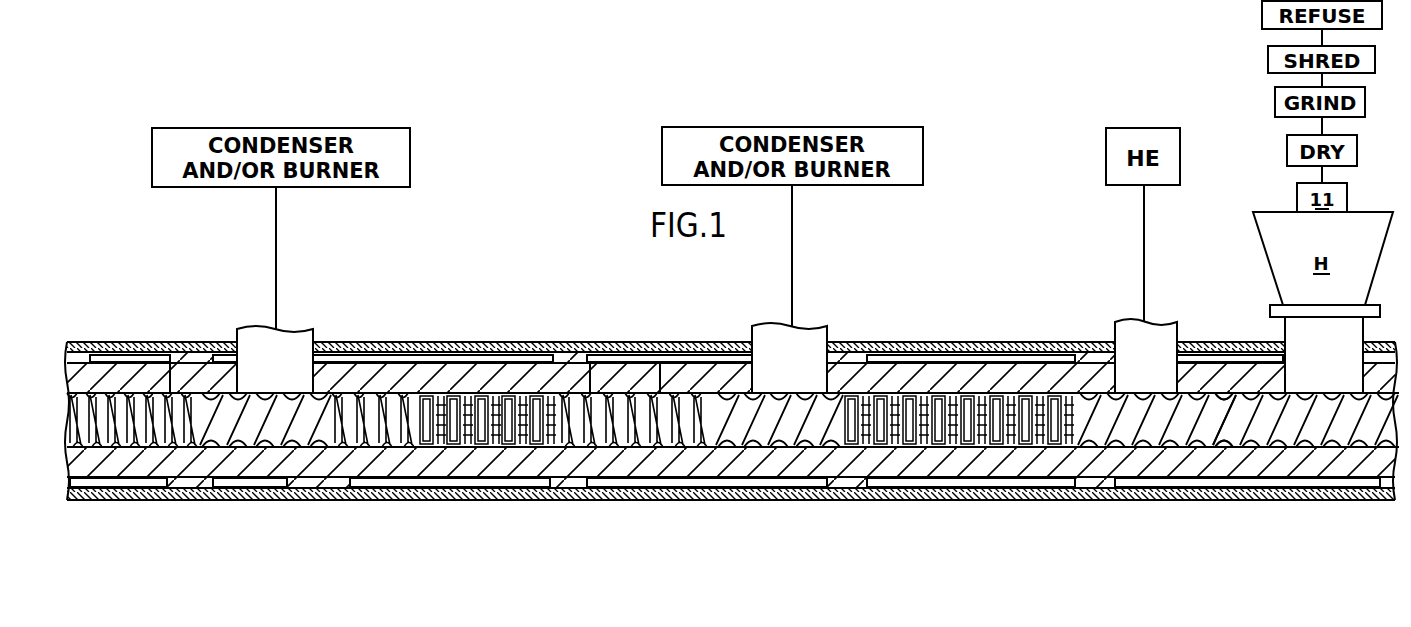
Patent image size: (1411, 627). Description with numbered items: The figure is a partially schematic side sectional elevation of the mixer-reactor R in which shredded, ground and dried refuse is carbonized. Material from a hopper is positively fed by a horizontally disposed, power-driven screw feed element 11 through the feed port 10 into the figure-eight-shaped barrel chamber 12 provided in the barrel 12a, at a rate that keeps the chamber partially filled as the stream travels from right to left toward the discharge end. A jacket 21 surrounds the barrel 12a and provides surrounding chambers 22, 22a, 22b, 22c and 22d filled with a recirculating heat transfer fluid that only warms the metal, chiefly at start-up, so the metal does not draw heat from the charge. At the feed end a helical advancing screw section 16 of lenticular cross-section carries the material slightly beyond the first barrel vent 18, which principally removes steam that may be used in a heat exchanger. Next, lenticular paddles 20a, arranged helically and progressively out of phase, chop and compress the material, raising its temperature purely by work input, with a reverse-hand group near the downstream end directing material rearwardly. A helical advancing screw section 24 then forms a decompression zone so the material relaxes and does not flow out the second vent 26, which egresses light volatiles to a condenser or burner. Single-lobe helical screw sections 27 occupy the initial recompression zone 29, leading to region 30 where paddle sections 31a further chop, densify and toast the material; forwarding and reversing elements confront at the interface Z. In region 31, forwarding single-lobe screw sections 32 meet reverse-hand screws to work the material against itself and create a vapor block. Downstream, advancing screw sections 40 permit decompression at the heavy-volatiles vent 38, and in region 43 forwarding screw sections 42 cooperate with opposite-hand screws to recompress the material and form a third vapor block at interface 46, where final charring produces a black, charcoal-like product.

The feed port 10 is at (1293, 328).
The screw feed element 11 is at (1370, 440).
The barrel chamber 12 is at (1098, 378).
The barrel 12a is at (1027, 352).
The helical advancing screw section 16 is at (1215, 422).
The first barrel vent 18 is at (1167, 370).
The lenticular paddle 20a is at (1013, 452).
The jacket 21 is at (902, 342).
The surrounding chamber 22 is at (1237, 360).
The surrounding chamber 22a is at (990, 356).
The surrounding chamber 22b is at (634, 358).
The surrounding chamber 22c is at (462, 358).
The surrounding chamber 22d is at (125, 356).
The helical advancing screw section 24 is at (725, 415).
The second vent 26 is at (818, 342).
The helical screw section 27 is at (688, 384).
The initial recompression zone 29 is at (600, 388).
The paddle region 30 is at (512, 387).
The reverse-hand screw region 31 is at (395, 392).
The paddle section 31a is at (487, 447).
The single lobe screw section 32 is at (400, 447).
The vent 38 is at (303, 342).
The advancing screw section 40 is at (293, 433).
The decompressing forwarding screw section 42 is at (167, 447).
The final recompression region 43 is at (178, 384).
The vapor block interface 46 is at (90, 388).
The interface Z is at (362, 390).
The mixer-reactor R is at (950, 328).